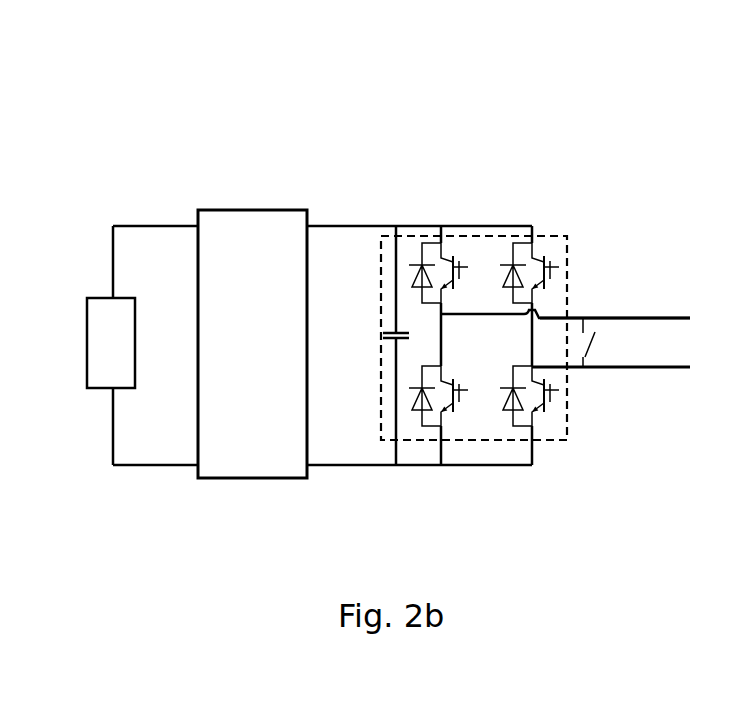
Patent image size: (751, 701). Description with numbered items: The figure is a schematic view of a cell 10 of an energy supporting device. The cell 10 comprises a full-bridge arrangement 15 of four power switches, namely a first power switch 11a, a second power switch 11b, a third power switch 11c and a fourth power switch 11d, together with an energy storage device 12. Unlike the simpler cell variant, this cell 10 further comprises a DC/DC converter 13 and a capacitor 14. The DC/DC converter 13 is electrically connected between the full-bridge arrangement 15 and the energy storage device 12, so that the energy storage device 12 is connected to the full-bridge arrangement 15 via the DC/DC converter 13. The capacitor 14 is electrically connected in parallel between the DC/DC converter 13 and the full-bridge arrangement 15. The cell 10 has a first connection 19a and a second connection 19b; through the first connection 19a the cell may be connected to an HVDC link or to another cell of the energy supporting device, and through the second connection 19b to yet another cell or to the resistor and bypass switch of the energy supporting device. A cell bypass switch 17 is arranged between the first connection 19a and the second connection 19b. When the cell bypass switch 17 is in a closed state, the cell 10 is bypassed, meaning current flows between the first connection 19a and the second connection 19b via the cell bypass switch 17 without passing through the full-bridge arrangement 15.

The cell 10 is at (120, 118).
The first power switch 11a is at (435, 230).
The second power switch 11b is at (521, 230).
The third power switch 11c is at (460, 438).
The fourth power switch 11d is at (558, 436).
The energy storage device 12 is at (86, 298).
The DC/DC converter 13 is at (237, 210).
The capacitor 14 is at (368, 310).
The full-bridge arrangement 15 is at (548, 248).
The cell bypass switch 17 is at (582, 379).
The first connection 19a is at (637, 318).
The second connection 19b is at (640, 367).